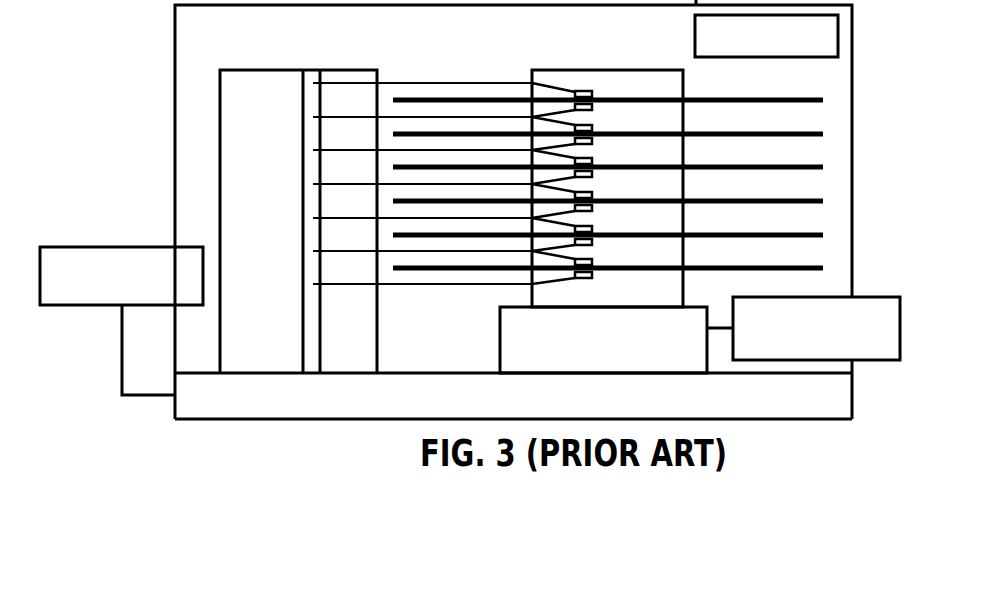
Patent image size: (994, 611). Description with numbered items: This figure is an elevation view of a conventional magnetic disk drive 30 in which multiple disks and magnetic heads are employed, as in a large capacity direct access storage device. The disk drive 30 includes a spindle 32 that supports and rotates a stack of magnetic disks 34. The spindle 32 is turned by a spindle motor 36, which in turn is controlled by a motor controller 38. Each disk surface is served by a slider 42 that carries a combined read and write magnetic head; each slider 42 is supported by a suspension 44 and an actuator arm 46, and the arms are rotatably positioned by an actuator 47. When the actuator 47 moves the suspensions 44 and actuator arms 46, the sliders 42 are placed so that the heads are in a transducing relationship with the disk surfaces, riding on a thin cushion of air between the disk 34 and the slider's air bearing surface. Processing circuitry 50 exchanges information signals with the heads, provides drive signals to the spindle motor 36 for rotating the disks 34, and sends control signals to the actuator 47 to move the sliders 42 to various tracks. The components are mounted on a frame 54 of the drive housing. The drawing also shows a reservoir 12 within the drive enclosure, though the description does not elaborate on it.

The ink reservoir 12 is at (840, 36).
The magnetic disk drive 30 is at (709, 85).
The spindle 32 is at (663, 70).
The magnetic disk 34 is at (800, 101).
The spindle motor 36 is at (619, 351).
The motor controller 38 is at (886, 360).
The slider 42 is at (596, 47).
The suspension 44 is at (580, 120).
The actuator arm 46 is at (487, 117).
The actuator 47 is at (253, 70).
The processing circuitry 50 is at (83, 305).
The frame 54 is at (297, 419).